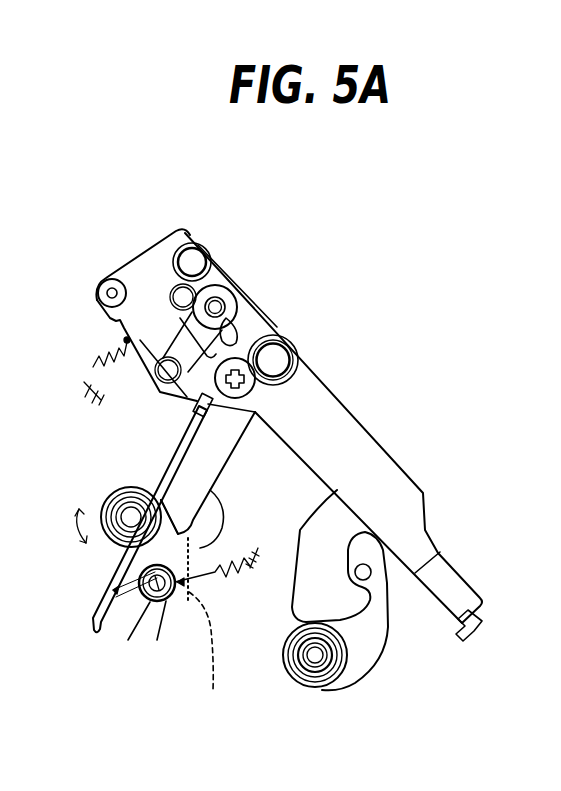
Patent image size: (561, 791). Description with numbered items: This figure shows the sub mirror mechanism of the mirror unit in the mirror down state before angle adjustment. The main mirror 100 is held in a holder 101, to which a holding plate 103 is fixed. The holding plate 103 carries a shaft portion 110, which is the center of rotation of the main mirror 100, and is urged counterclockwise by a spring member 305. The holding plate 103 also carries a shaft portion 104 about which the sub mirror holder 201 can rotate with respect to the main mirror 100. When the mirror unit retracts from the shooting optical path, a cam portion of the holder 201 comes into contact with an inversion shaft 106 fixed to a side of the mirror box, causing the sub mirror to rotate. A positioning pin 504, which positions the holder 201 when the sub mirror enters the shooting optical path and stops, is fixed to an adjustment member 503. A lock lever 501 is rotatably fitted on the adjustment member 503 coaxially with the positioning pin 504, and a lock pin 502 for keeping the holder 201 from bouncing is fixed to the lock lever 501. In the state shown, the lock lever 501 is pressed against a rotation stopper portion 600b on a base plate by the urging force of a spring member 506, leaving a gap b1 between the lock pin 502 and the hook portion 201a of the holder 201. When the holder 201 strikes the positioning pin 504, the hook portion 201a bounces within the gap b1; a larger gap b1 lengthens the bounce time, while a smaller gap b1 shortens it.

The main mirror 100 is at (484, 630).
The holder 101 is at (360, 437).
The holding plate 103 is at (150, 268).
The shaft portion 104 is at (242, 366).
The inversion shaft 106 is at (222, 300).
The shaft portion 110 is at (109, 287).
The holder 201 is at (212, 492).
The hook portion 201a is at (228, 534).
The spring member 305 is at (93, 367).
The lock lever 501 is at (163, 602).
The lock pin 502 is at (128, 636).
The adjustment member 503 is at (86, 512).
The positioning pin 504 is at (120, 480).
The spring member 506 is at (236, 573).
The rotation stopper portion 600b is at (221, 634).
The gap b1 is at (128, 601).